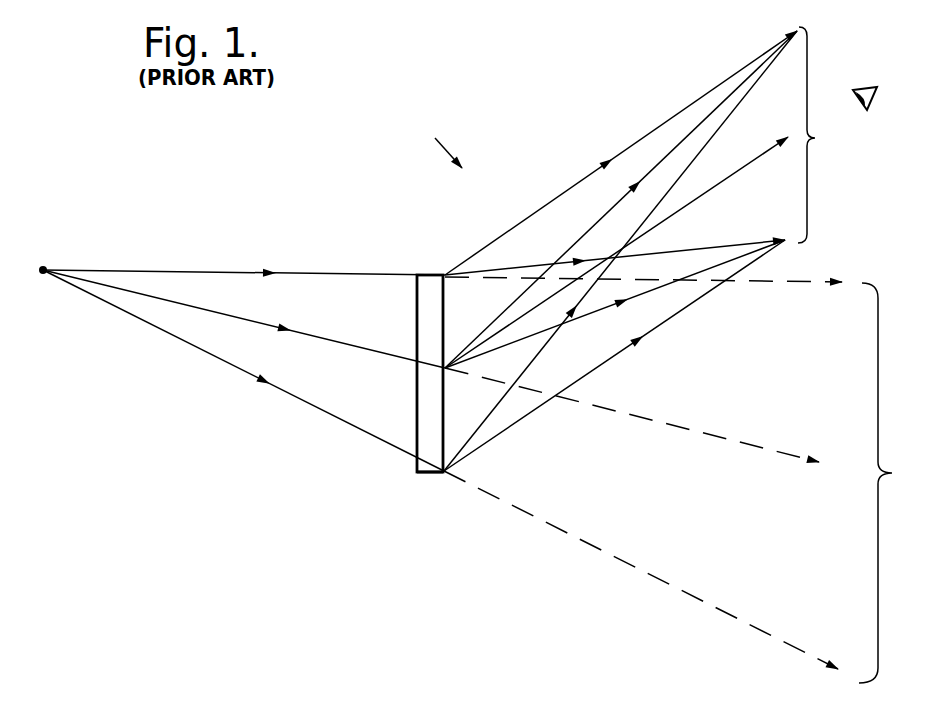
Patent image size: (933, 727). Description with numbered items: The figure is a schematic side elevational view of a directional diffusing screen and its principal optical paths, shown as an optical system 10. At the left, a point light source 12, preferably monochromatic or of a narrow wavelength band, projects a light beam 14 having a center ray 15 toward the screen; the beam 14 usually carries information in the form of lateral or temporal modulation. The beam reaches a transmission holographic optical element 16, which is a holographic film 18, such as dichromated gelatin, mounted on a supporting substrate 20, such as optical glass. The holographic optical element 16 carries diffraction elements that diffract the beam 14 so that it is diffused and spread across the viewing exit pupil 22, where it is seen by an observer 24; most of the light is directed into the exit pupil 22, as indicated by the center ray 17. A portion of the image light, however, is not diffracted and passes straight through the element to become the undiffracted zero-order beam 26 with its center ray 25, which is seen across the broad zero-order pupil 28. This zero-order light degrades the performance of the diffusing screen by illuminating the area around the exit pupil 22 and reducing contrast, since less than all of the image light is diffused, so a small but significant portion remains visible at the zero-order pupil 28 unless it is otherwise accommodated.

The optical system 10 is at (439, 143).
The point light source 12 is at (49, 247).
The light beam 14 is at (143, 269).
The center ray 15 is at (350, 345).
The transmission holographic optical element 16 is at (428, 273).
The center ray 17 is at (719, 184).
The holographic film 18 is at (440, 443).
The supporting substrate 20 is at (416, 475).
The viewing exit pupil 22 is at (811, 58).
The observer 24 is at (868, 109).
The center ray 25 is at (721, 443).
The undiffracted zero-order beam 26 is at (633, 566).
The zero-order pupil 28 is at (683, 480).